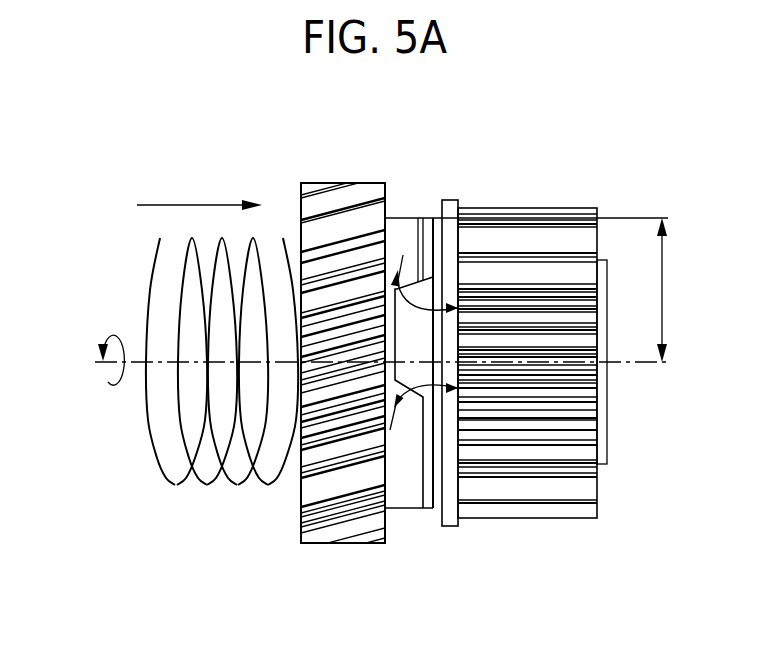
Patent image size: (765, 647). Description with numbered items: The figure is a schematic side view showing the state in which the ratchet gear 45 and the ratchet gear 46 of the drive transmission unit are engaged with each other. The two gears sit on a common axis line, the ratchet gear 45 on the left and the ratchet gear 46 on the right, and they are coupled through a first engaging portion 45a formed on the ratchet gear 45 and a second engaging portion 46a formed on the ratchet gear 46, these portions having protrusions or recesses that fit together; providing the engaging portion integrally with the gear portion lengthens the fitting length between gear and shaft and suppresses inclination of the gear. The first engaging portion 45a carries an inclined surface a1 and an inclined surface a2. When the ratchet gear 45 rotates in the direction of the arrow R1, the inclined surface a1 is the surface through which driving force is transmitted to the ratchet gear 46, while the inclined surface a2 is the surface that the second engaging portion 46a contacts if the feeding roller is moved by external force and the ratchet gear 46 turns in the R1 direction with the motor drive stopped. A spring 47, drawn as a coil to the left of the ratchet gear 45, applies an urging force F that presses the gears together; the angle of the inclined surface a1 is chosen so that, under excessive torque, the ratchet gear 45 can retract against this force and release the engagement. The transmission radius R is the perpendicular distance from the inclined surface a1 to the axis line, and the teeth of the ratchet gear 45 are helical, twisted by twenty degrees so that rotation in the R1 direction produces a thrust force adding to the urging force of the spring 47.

The ratchet gear 45 is at (340, 545).
The first engaging portion 45a is at (417, 278).
The ratchet gear 46 is at (548, 520).
The second engaging portion 46a is at (419, 408).
The spring 47 is at (205, 487).
The urging force F is at (199, 190).
The rotation direction R1 is at (89, 357).
The transmission radius R is at (672, 290).
The inclined surface a1 is at (417, 230).
The inclined surface a2 is at (413, 398).